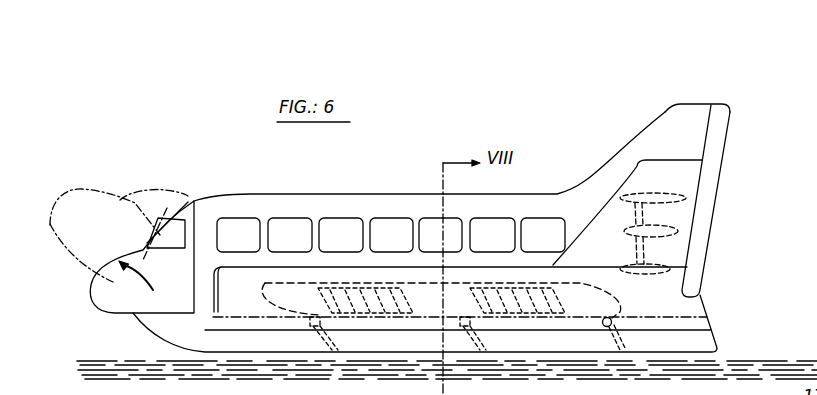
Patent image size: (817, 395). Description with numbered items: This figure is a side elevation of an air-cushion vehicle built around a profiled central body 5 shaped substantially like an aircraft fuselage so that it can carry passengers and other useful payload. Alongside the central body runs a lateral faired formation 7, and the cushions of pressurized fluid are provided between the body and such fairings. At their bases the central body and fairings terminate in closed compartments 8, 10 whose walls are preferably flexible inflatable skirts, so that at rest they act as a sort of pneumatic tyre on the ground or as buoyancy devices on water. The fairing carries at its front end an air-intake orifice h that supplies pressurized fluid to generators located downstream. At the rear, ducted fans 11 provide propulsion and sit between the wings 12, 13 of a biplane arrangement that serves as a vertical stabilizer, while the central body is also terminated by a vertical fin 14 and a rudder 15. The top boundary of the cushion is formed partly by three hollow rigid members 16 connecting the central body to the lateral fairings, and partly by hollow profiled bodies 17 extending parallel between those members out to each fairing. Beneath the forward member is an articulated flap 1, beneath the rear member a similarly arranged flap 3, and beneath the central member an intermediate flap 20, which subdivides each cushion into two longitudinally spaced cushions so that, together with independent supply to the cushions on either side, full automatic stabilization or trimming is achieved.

The flap 1 is at (323, 332).
The flap 3 is at (615, 323).
The central body 5 is at (260, 202).
The lateral faired formation 7 is at (343, 250).
The closed compartment 8 is at (170, 332).
The closed compartment 10 is at (263, 340).
The ducted fan 11 is at (638, 207).
The wing 12 is at (667, 272).
The wing 13 is at (663, 200).
The vertical fin 14 is at (688, 118).
The rudder 15 is at (722, 118).
The hollow rigid member 16 is at (298, 288).
The hollow profiled body 17 is at (380, 287).
The intermediate flap 20 is at (480, 340).
The air-intake orifice h is at (213, 287).